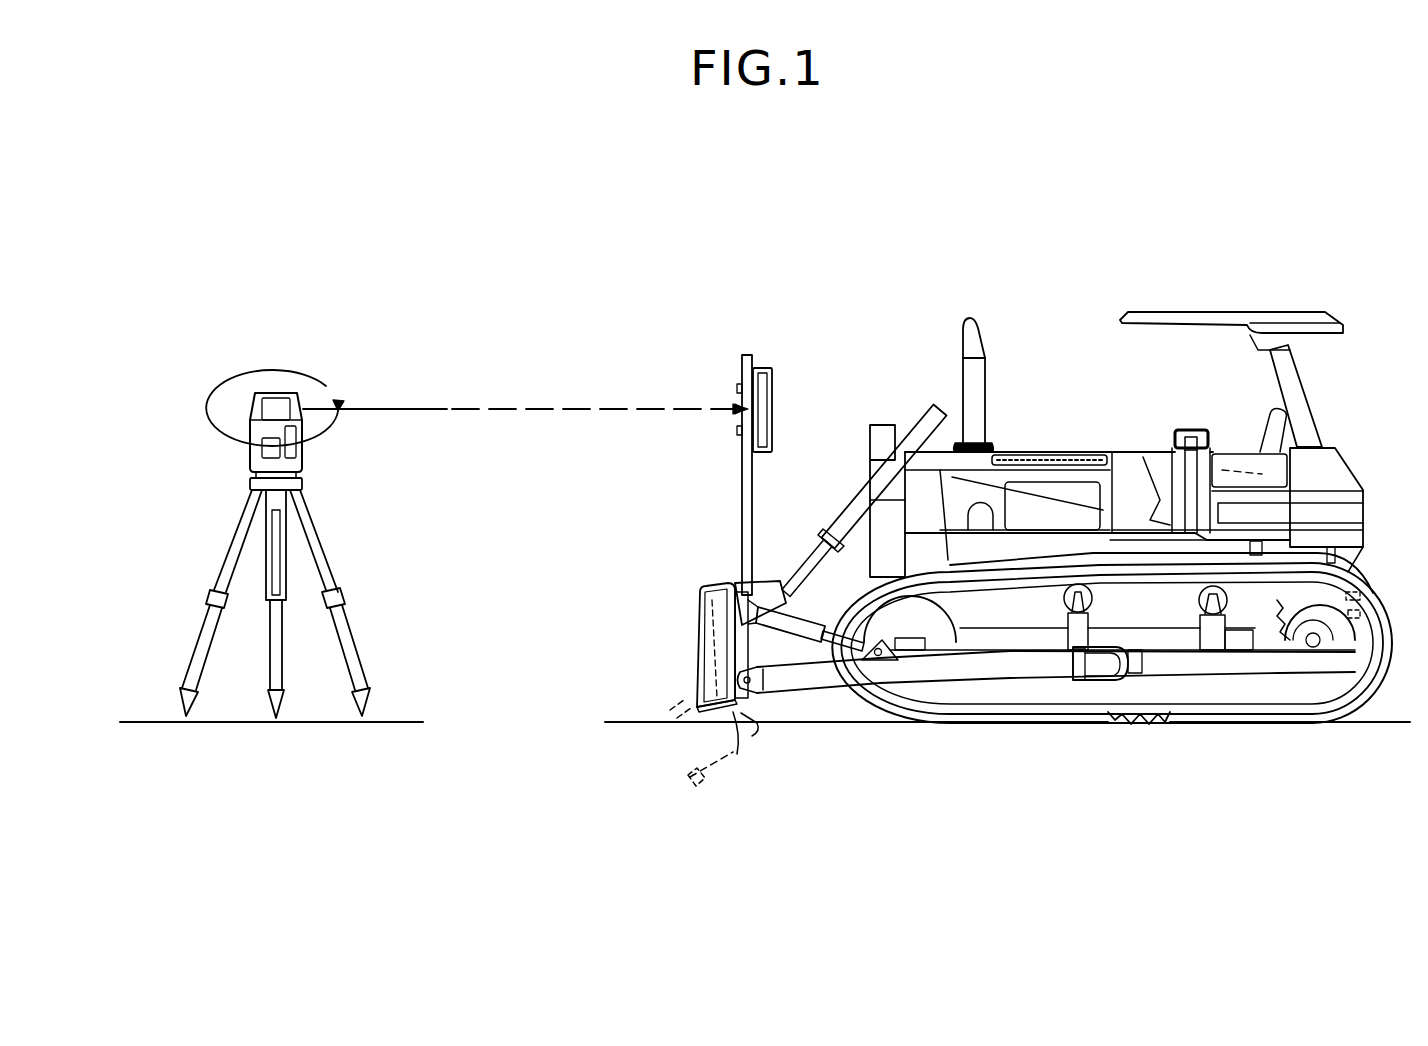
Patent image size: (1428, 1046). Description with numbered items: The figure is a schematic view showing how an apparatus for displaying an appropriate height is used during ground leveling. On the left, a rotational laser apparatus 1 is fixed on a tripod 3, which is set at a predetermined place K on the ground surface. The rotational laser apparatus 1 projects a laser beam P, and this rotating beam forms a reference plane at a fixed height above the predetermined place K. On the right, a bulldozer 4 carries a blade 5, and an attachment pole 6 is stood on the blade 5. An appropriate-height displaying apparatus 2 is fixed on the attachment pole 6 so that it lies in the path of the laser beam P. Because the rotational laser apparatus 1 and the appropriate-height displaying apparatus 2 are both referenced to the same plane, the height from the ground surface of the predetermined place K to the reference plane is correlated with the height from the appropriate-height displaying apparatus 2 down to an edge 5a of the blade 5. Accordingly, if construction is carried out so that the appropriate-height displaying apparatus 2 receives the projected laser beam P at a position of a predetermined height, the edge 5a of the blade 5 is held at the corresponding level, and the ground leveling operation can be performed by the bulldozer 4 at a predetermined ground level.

The rotational laser apparatus 1 is at (276, 392).
The appropriate-height displaying apparatus 2 is at (769, 358).
The tripod 3 is at (212, 570).
The bulldozer 4 is at (1075, 436).
The blade 5 is at (710, 655).
The edge 5a is at (690, 705).
The attachment pole 6 is at (742, 490).
The laser beam P is at (525, 390).
The predetermined place K is at (292, 774).